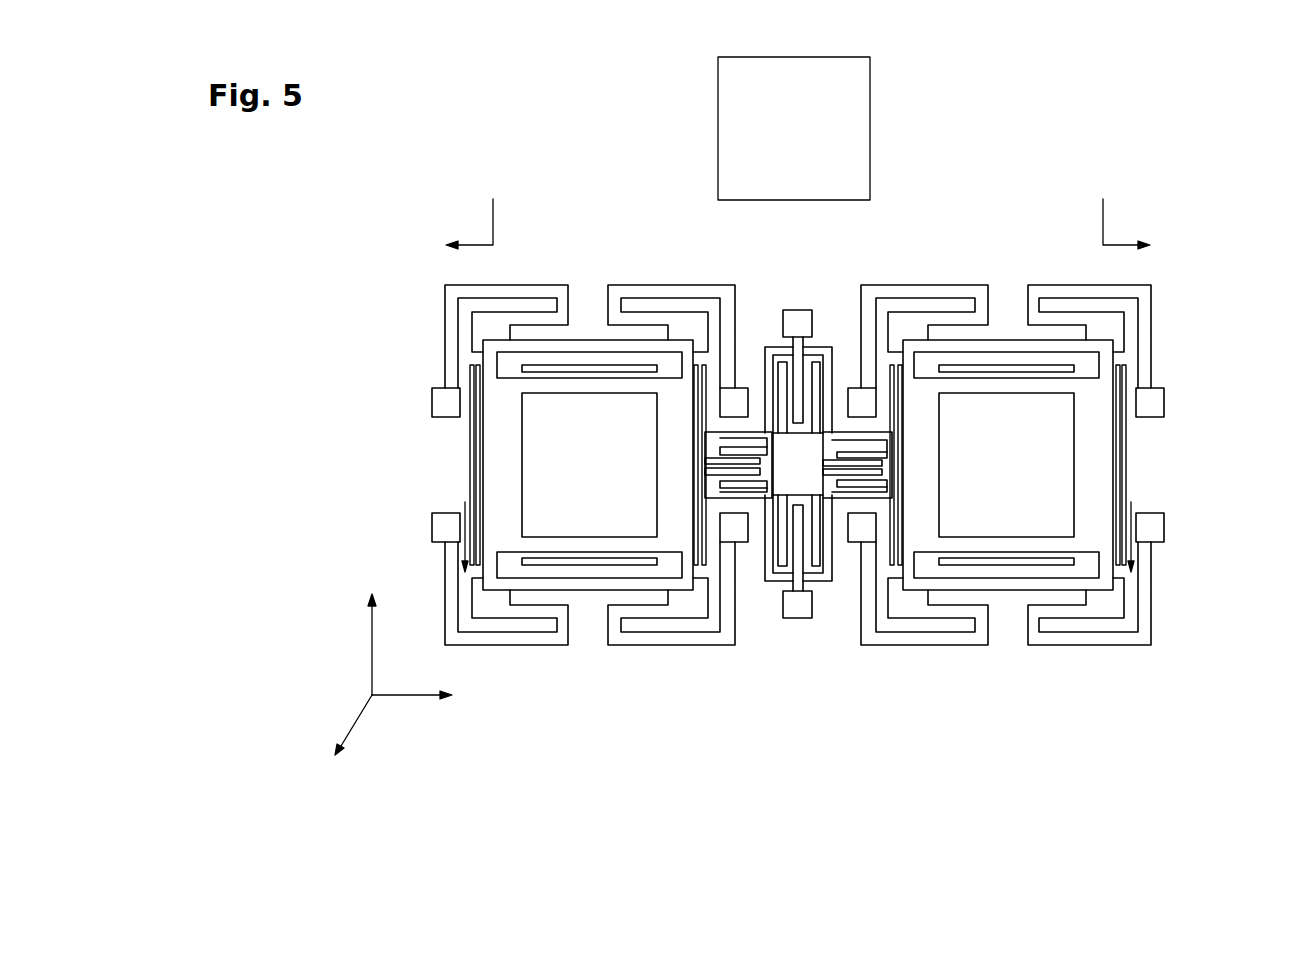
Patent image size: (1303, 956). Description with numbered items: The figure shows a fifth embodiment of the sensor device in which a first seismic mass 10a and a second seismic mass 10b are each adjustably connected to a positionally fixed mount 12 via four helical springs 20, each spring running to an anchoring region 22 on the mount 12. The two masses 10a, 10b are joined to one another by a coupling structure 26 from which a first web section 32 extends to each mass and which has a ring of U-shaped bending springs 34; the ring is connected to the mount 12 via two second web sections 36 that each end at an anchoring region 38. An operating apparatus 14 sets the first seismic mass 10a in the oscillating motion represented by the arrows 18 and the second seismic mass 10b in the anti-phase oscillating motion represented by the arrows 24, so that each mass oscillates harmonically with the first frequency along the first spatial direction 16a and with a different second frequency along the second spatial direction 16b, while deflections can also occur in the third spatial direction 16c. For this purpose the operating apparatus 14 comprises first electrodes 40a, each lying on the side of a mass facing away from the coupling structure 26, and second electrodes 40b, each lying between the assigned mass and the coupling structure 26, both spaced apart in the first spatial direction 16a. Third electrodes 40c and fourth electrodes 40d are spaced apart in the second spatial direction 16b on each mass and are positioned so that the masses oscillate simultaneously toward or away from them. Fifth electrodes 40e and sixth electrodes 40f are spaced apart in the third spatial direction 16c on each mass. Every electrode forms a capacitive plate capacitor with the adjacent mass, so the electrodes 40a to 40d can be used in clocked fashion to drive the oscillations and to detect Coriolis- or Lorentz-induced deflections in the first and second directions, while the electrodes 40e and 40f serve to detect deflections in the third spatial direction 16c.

The first seismic mass 10a is at (782, 467).
The second seismic mass 10b is at (1008, 467).
The mount 12 is at (871, 747).
The operating apparatus 14 is at (872, 129).
The first spatial direction 16a is at (410, 702).
The second spatial direction 16b is at (368, 662).
The third spatial direction 16c is at (355, 718).
The arrows 18 is at (380, 550).
The helical springs 20 is at (447, 343).
The anchoring region 22 is at (432, 402).
The arrows 24 is at (1216, 550).
The coupling structure 26 is at (840, 598).
The first web section 32 is at (733, 464).
The bending springs 34 is at (798, 467).
The second web section 36 is at (801, 349).
The anchoring region 38 is at (786, 315).
The first electrode 40a is at (478, 440).
The second electrode 40b is at (708, 545).
The third electrode 40c is at (575, 368).
The fourth electrode 40d is at (545, 563).
The fifth electrode 40e is at (626, 410).
The sixth electrode 40f is at (970, 410).